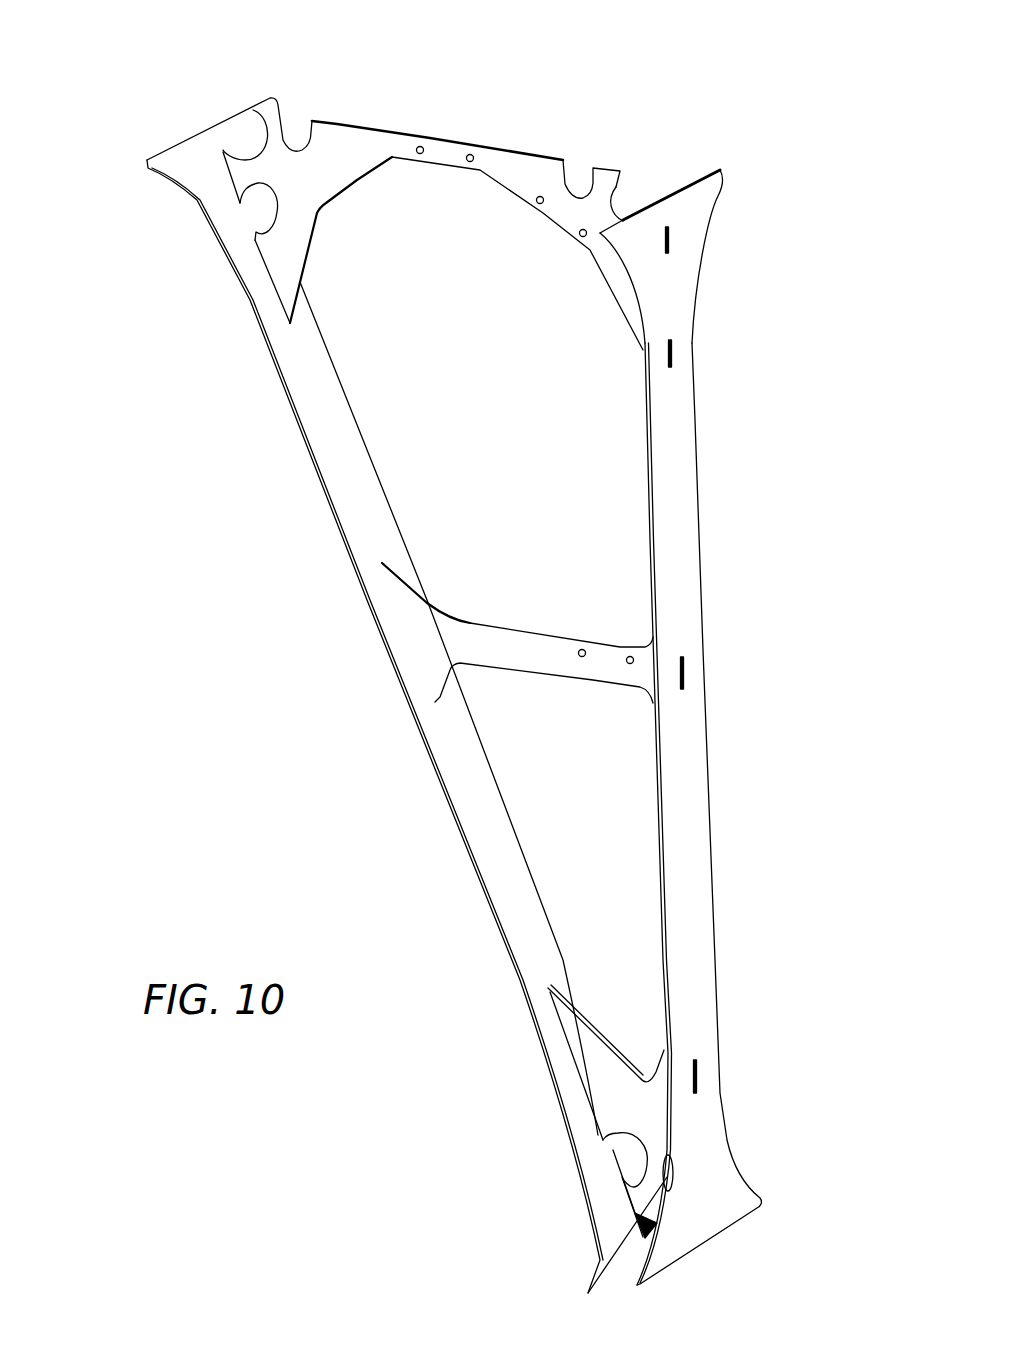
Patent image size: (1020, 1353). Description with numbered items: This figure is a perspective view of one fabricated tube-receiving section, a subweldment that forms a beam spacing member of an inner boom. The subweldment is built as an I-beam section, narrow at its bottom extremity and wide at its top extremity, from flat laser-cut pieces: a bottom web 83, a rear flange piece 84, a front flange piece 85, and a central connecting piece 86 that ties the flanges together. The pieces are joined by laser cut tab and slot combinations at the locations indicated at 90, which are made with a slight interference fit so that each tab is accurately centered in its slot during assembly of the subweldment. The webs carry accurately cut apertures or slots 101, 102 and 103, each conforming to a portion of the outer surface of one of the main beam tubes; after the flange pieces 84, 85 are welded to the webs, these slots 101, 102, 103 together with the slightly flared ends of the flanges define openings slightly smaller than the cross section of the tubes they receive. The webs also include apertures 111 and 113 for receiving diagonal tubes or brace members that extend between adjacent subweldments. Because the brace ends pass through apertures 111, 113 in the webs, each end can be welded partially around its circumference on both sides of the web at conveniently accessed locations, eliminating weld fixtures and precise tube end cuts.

The bottom web 83 is at (608, 1065).
The rear flange piece 84 is at (333, 448).
The front flange piece 85 is at (672, 467).
The central connecting piece 86 is at (533, 643).
The tab and slot combinations 90 is at (343, 123).
The slot 101 is at (620, 195).
The slot 102 is at (227, 125).
The slot 103 is at (655, 1220).
The aperture 111 is at (301, 150).
The aperture 113 is at (667, 1153).